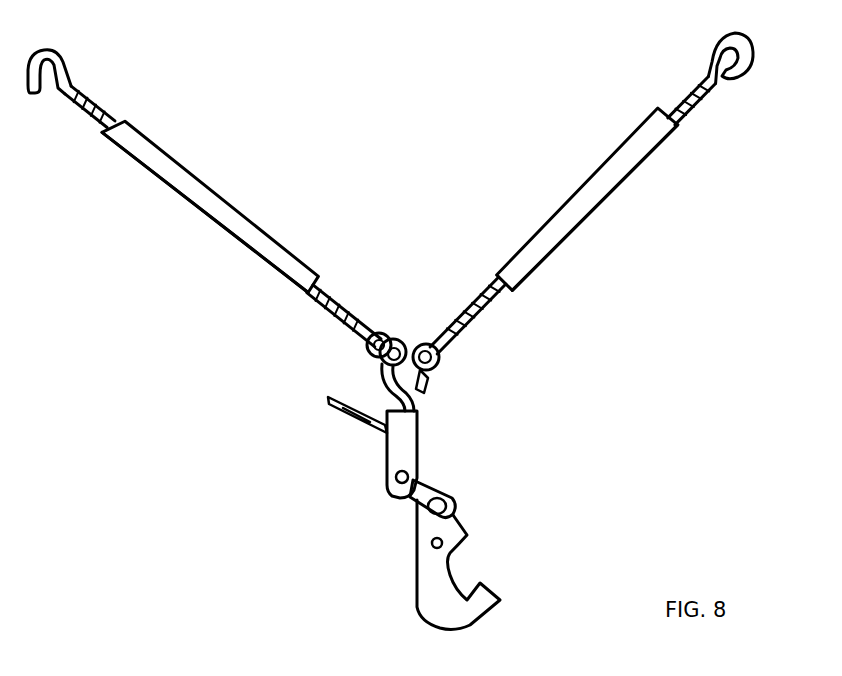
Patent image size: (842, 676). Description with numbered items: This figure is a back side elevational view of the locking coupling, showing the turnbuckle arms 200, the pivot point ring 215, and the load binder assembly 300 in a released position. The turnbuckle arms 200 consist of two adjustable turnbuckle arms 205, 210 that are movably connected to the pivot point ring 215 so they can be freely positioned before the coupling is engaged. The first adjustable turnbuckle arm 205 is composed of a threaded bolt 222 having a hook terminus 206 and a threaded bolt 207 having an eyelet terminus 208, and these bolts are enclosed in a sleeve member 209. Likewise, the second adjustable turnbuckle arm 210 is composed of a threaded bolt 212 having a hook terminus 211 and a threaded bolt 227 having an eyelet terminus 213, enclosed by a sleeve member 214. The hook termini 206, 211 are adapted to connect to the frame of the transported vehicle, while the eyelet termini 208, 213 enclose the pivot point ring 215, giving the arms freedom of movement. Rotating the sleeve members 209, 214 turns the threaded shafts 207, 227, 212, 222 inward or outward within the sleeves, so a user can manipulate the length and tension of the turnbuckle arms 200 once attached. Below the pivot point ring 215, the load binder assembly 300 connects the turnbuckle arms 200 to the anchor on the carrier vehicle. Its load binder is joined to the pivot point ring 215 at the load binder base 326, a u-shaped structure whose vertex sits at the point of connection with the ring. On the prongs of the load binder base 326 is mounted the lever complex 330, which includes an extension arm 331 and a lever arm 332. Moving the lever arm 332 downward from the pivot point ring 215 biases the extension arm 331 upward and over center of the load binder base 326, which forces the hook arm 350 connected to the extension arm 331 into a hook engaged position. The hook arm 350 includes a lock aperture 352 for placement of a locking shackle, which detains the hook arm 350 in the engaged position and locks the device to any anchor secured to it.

The turnbuckle arms 200 is at (607, 260).
The adjustable turnbuckle arm 205 is at (665, 138).
The hook terminus 206 is at (740, 60).
The threaded bolt 207 is at (483, 312).
The eyelet terminus 208 is at (442, 360).
The sleeve member 209 is at (612, 188).
The adjustable turnbuckle arm 210 is at (160, 170).
The hook terminus 211 is at (60, 66).
The threaded bolt 212 is at (78, 108).
The eyelet terminus 213 is at (386, 332).
The sleeve member 214 is at (242, 227).
The pivot point ring 215 is at (425, 388).
The threaded bolt 222 is at (700, 95).
The threaded bolt 227 is at (320, 297).
The load binder assembly 300 is at (508, 508).
The load binder base 326 is at (403, 432).
The lever complex 330 is at (425, 490).
The extension arm 331 is at (413, 493).
The lever arm 332 is at (330, 408).
The hook arm 350 is at (472, 613).
The lock aperture 352 is at (432, 547).